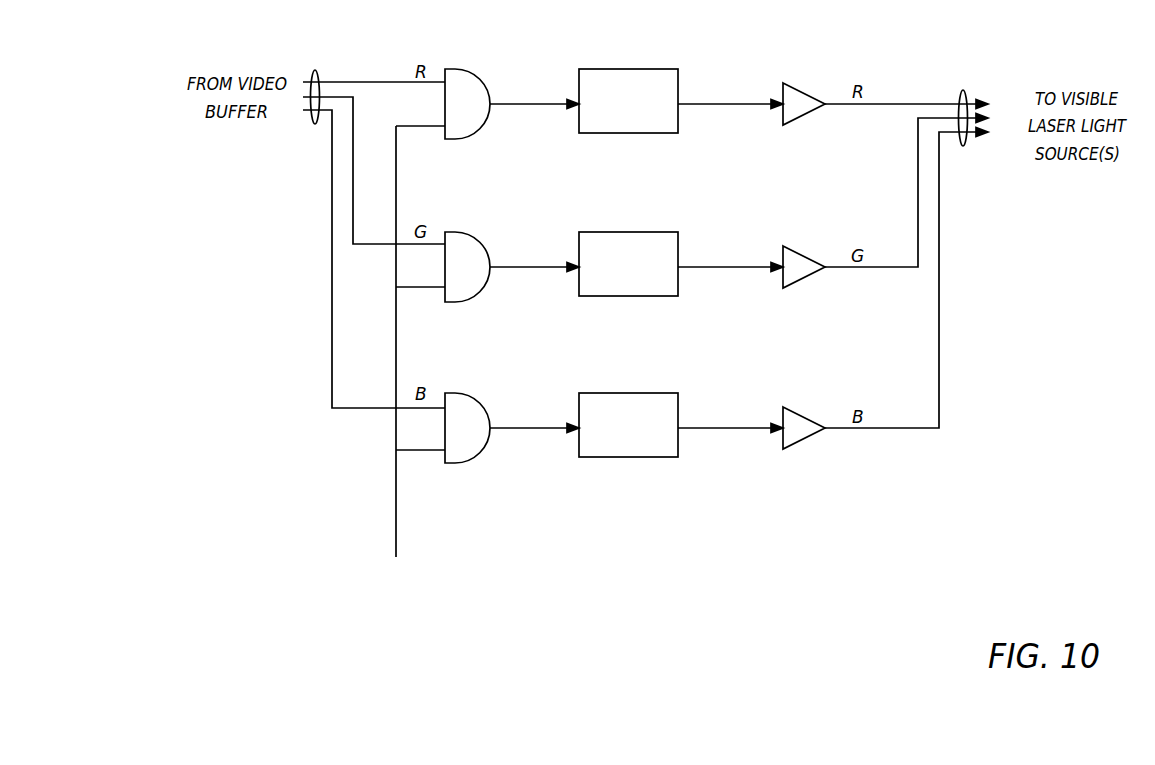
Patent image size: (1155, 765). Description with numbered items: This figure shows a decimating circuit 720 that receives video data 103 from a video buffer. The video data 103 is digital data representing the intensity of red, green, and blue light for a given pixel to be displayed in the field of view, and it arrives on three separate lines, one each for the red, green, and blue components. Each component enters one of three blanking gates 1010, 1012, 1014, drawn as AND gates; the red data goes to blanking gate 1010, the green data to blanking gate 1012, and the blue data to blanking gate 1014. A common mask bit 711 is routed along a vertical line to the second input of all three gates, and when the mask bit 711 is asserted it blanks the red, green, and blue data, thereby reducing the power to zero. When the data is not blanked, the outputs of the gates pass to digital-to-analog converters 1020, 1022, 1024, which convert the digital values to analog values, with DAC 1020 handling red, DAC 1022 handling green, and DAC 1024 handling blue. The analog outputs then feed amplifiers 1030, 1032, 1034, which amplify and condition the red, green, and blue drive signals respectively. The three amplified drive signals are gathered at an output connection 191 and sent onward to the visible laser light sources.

The video data 103 is at (317, 67).
The mask bit 711 is at (396, 492).
The blanking gate 1010 is at (474, 70).
The blanking gate 1012 is at (474, 234).
The blanking gate 1014 is at (474, 397).
The digital-to-analog converter 1020 is at (634, 68).
The digital-to-analog converter 1022 is at (634, 231).
The digital-to-analog converter 1024 is at (634, 392).
The amplifier 1030 is at (800, 83).
The amplifier 1032 is at (800, 247).
The amplifier 1034 is at (800, 408).
The laser light source connection 191 is at (965, 88).
The decimating circuit 720 is at (258, 591).